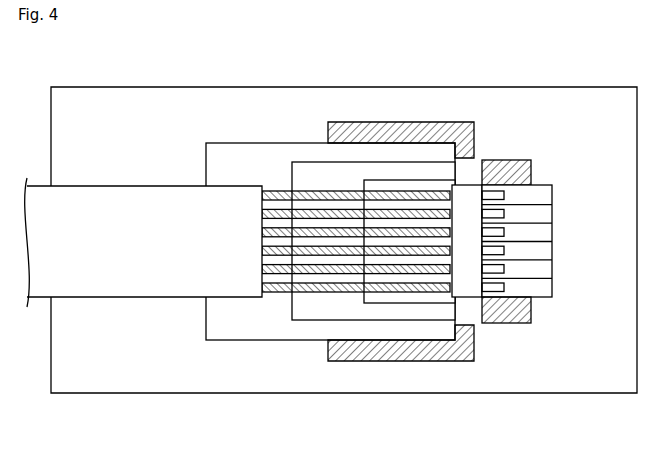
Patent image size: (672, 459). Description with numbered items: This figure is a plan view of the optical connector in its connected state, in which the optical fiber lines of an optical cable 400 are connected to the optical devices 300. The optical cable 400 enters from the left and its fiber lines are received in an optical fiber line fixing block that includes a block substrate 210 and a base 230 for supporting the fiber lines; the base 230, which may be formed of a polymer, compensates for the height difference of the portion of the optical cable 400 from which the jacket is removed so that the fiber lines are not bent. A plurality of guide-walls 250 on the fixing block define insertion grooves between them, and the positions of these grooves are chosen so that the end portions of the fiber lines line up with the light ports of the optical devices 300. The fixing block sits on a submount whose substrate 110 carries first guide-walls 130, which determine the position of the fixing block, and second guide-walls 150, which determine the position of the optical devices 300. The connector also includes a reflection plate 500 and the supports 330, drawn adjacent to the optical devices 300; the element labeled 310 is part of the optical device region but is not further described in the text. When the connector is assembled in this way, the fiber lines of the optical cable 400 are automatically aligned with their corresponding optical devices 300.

The substrate 110 is at (596, 98).
The first guide-walls 130 is at (416, 128).
The second guide-walls 150 is at (512, 168).
The block substrate 210 is at (229, 153).
The base 230 is at (314, 172).
The guide-walls 250 is at (383, 185).
The optical devices 300 is at (560, 311).
The connector body 310 is at (541, 292).
The supports 330 is at (497, 292).
The optical cable 400 is at (119, 178).
The reflection plate 500 is at (466, 292).